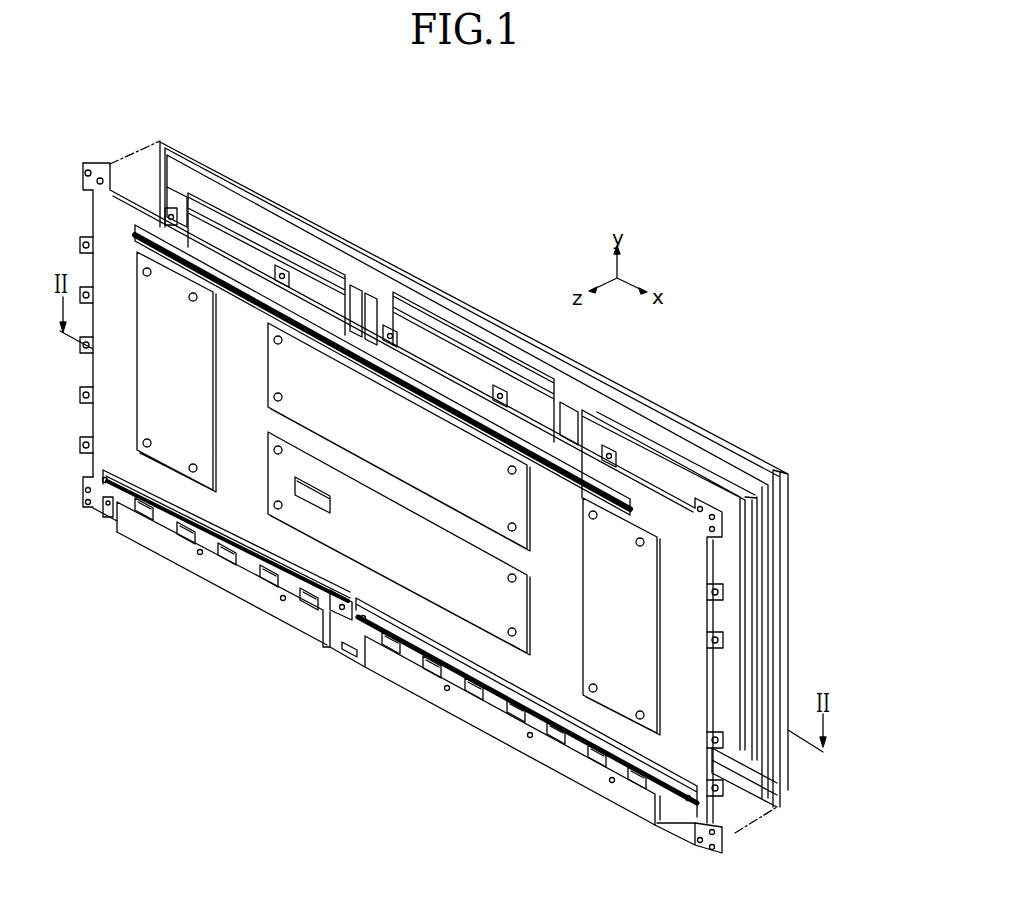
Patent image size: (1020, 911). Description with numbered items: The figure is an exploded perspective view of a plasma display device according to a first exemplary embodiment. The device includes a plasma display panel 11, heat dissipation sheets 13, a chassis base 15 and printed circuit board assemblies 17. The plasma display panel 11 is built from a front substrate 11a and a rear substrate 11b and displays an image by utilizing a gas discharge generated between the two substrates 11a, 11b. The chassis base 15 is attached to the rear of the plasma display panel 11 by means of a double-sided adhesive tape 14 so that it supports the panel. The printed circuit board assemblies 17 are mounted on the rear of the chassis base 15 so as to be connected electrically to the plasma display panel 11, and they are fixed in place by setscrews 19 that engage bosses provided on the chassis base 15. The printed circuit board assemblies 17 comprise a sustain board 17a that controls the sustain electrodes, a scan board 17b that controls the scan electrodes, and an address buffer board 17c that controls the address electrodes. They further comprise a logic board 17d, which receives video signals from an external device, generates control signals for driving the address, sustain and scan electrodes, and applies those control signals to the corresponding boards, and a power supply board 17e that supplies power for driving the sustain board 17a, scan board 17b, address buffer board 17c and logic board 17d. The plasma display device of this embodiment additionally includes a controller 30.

The plasma display panel 11 is at (476, 309).
The front substrate 11a is at (782, 622).
The rear substrate 11b is at (768, 677).
The heat dissipation sheets 13 is at (395, 317).
The double-sided adhesive tape 14 is at (219, 190).
The chassis base 15 is at (657, 507).
The printed circuit board assemblies 17 is at (400, 641).
The sustain board 17a is at (593, 660).
The scan board 17b is at (180, 457).
The address buffer board 17c is at (250, 565).
The logic board 17d is at (338, 535).
The power supply board 17e is at (443, 480).
The setscrews 19 is at (108, 517).
The controller 30 is at (297, 487).